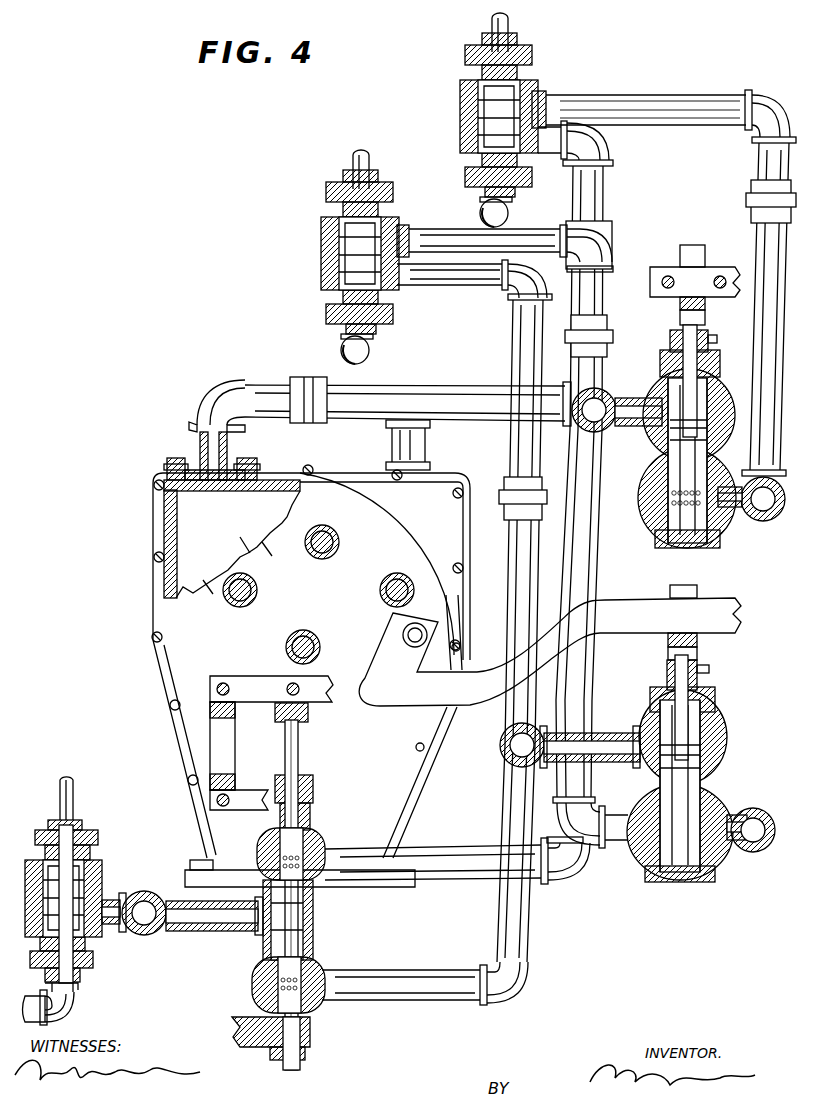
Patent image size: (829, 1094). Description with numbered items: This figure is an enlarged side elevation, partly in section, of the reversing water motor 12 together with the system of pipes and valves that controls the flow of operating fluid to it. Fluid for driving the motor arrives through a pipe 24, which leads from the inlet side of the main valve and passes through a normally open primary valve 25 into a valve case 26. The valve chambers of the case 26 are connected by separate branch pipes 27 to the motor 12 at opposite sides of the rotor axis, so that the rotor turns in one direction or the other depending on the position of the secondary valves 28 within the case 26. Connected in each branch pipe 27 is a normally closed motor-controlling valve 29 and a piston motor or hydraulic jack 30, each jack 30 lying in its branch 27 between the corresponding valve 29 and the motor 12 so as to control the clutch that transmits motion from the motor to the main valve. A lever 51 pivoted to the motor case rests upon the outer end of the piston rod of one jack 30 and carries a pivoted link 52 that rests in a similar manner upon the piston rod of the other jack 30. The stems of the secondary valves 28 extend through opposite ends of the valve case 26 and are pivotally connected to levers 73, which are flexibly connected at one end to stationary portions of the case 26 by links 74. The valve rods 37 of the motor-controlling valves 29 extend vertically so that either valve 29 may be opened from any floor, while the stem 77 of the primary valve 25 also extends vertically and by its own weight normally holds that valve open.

The reversing water motor 12 is at (166, 592).
The pipe 24 is at (146, 926).
The primary valve 25 is at (88, 948).
The valve case 26 is at (312, 937).
The branch pipes 27 is at (598, 140).
The secondary valves 28 is at (312, 840).
The motor-controlling valve 29 is at (468, 110).
The hydraulic jack 30 is at (670, 437).
The valve rods 37 is at (509, 22).
The lever 51 is at (625, 605).
The pivoted link 52 is at (710, 278).
The levers 73 is at (252, 684).
The links 74 is at (226, 745).
The stem 77 is at (76, 782).